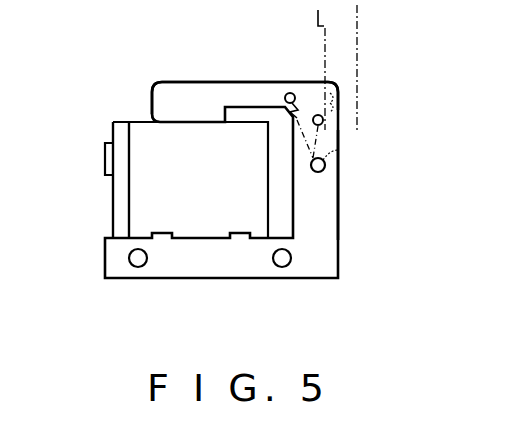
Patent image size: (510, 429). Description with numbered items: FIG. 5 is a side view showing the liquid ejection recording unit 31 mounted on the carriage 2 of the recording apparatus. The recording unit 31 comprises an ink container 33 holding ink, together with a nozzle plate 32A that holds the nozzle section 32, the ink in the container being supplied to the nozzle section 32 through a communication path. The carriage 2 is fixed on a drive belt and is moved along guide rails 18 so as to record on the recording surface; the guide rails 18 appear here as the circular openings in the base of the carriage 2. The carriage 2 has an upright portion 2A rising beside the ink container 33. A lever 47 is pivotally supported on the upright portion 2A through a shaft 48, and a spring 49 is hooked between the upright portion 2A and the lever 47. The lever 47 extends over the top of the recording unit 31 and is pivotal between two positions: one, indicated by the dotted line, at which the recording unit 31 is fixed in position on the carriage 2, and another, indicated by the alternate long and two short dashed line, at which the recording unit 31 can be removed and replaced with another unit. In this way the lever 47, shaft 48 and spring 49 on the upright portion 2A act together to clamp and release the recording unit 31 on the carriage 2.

The carriage 2 is at (328, 262).
The upright portion 2A is at (338, 184).
The guide rails 18 is at (140, 267).
The liquid ejection recording unit 31 is at (144, 114).
The nozzle section 32 is at (105, 158).
The nozzle plate 32A is at (115, 200).
The ink container 33 is at (257, 210).
The lever 47 is at (208, 88).
The shaft 48 is at (316, 113).
The spring 49 is at (338, 142).